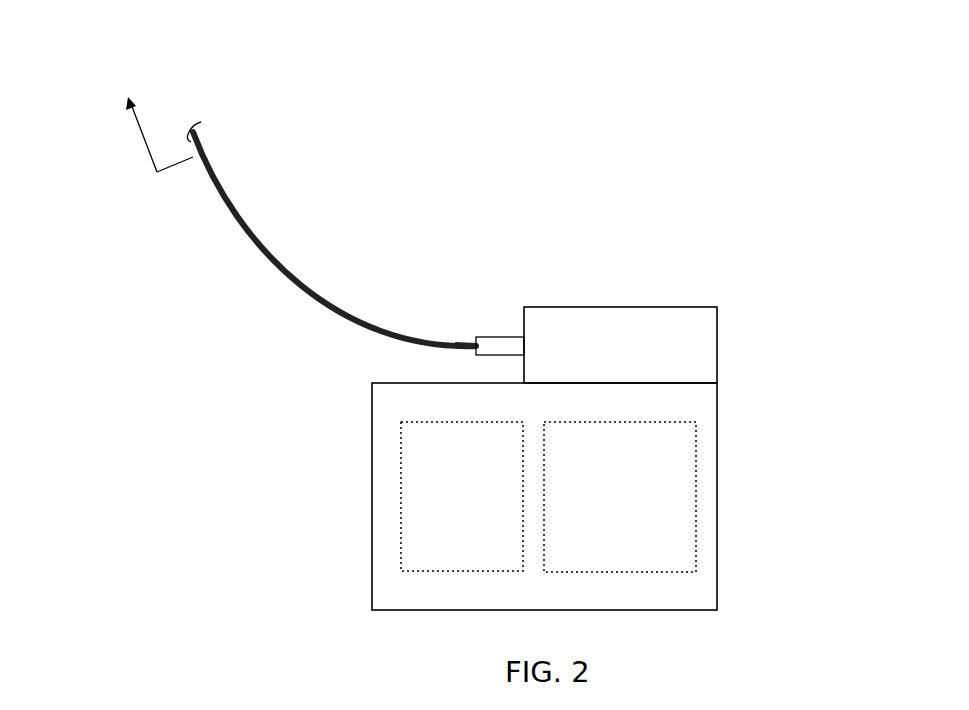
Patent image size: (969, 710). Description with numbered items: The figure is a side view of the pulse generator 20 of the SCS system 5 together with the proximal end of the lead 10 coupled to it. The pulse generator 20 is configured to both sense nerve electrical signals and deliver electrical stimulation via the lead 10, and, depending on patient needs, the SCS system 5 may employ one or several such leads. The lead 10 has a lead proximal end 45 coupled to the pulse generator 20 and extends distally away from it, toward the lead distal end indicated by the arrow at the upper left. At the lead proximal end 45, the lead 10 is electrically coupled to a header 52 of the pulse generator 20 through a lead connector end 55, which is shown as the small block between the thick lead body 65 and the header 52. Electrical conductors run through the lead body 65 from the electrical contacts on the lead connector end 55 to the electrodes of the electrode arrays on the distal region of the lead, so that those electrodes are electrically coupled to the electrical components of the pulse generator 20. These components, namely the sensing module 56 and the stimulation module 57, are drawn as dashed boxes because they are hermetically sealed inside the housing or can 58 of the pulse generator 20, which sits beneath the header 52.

The SCS system 5 is at (616, 70).
The lead 10 is at (212, 244).
The lead body 65 is at (277, 262).
The lead proximal end 45 is at (448, 321).
The pulse generator 20 is at (344, 410).
The housing 58 is at (717, 433).
The header 52 is at (618, 305).
The lead connector end 55 is at (500, 337).
The sensing module 56 is at (401, 495).
The stimulation module 57 is at (696, 497).